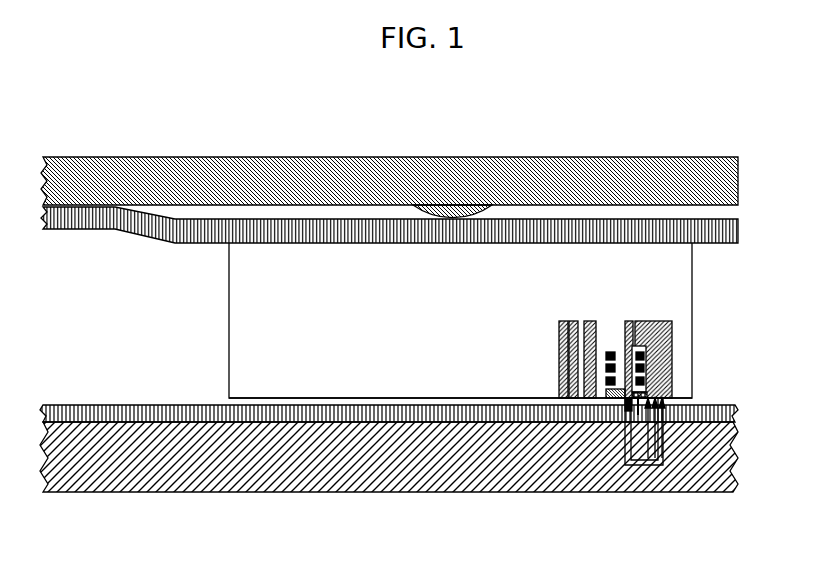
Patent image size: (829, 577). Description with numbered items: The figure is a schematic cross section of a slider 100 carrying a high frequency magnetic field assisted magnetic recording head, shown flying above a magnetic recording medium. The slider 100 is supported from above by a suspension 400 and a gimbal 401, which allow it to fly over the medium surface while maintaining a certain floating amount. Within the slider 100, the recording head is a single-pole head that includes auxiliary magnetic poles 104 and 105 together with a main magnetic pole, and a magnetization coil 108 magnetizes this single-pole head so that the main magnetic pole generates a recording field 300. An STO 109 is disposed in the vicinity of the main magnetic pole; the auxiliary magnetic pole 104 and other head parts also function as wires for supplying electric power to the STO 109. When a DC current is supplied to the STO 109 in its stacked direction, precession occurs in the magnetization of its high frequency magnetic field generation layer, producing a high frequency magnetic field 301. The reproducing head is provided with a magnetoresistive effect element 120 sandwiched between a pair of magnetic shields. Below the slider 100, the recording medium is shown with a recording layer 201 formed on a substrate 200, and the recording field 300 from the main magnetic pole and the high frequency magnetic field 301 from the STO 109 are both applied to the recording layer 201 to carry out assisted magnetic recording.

The slider 100 is at (230, 372).
The auxiliary magnetic pole 104 is at (660, 321).
The auxiliary magnetic pole 105 is at (590, 321).
The magnetization coil 108 is at (608, 351).
The STO 109 is at (665, 389).
The magnetoresistive effect element 120 is at (560, 385).
The substrate 200 is at (372, 475).
The recording layer 201 is at (733, 413).
The recording field 300 is at (653, 467).
The high frequency magnetic field 301 is at (662, 412).
The suspension 400 is at (432, 157).
The gimbal 401 is at (742, 231).